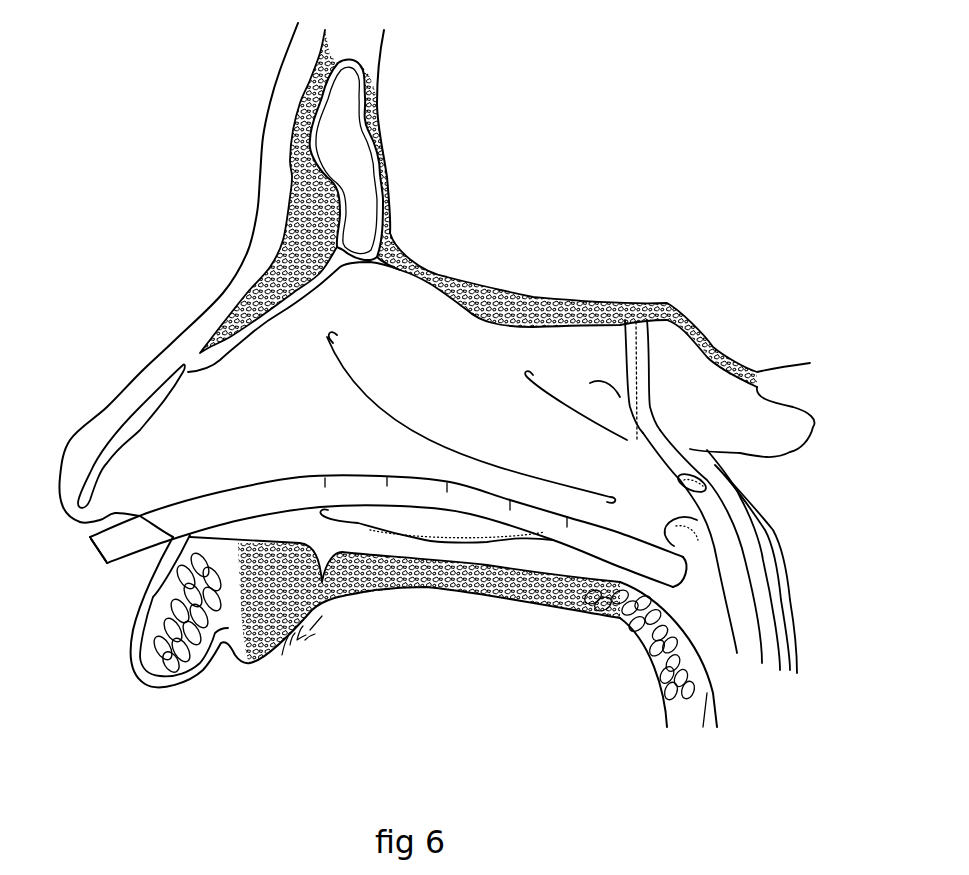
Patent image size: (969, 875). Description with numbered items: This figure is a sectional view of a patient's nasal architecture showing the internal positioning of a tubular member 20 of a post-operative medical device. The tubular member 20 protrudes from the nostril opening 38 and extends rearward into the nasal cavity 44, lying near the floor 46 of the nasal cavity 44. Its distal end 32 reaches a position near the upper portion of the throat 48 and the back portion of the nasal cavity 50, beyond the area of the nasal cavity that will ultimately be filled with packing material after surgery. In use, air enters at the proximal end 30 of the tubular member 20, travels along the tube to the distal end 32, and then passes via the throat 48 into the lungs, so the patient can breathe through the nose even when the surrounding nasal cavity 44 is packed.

The tubular member 20 is at (237, 483).
The proximal end 30 is at (80, 550).
The distal end 32 is at (678, 540).
The nostril opening 38 is at (122, 585).
The nasal cavity 44 is at (432, 345).
The floor 46 is at (418, 555).
The throat 48 is at (748, 599).
The back portion of the nasal cavity 50 is at (675, 601).